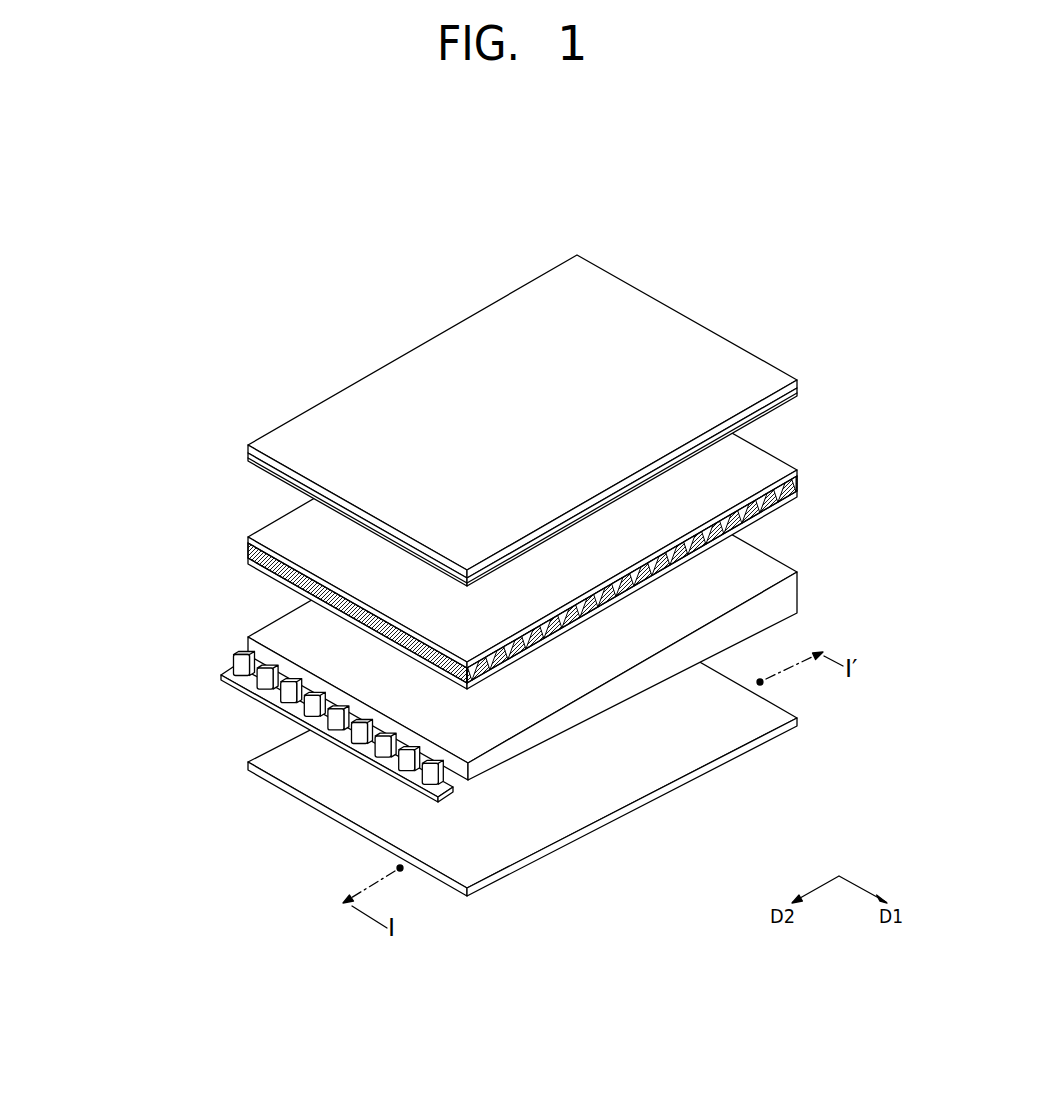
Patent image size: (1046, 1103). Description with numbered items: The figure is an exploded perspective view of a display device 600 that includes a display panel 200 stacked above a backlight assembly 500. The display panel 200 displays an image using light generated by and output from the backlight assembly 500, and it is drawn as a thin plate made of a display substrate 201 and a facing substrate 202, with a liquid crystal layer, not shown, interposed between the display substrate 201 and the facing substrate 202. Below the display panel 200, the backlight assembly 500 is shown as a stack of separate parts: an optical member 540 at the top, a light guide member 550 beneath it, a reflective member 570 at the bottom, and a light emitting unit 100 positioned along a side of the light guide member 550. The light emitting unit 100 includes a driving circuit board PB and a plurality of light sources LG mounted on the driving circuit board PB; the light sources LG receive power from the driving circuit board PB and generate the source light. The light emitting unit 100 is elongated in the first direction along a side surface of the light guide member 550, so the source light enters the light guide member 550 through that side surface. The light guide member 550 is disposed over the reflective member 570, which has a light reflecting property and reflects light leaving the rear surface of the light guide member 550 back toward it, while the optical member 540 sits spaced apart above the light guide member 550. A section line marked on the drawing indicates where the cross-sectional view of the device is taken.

The display device 600 is at (678, 272).
The display panel 200 is at (872, 357).
The facing substrate 202 is at (760, 390).
The display substrate 201 is at (788, 400).
The backlight assembly 500 is at (872, 728).
The optical member 540 is at (760, 470).
The light guide member 550 is at (760, 571).
The reflective member 570 is at (778, 723).
The light emitting unit 100 is at (160, 656).
The light source LG is at (233, 656).
The driving circuit board PB is at (247, 685).